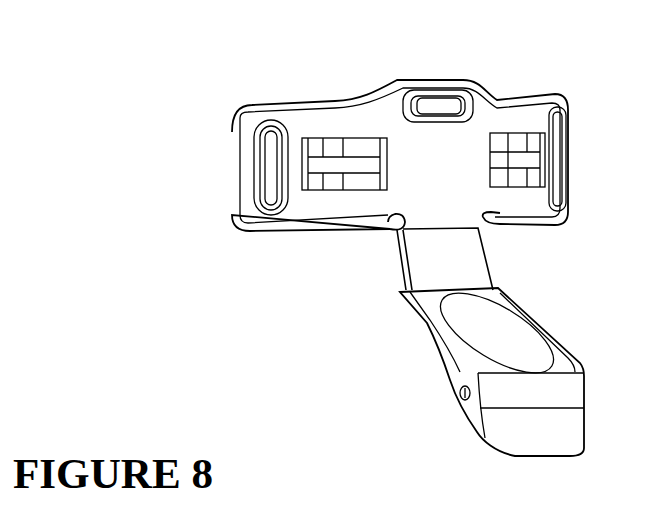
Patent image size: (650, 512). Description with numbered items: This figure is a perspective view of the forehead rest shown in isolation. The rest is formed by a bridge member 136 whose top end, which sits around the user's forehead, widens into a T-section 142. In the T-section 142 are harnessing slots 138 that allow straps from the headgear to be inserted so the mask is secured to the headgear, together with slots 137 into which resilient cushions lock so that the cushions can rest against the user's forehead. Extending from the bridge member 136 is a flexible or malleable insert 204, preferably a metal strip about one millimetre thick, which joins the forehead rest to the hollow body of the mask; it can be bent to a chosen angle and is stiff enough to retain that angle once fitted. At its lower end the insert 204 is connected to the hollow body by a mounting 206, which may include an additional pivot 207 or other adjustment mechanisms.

The bridge member 136 is at (393, 226).
The slots 137 is at (327, 177).
The harnessing slots 138 is at (263, 139).
The T-section 142 is at (460, 148).
The malleable insert 204 is at (400, 265).
The mounting 206 is at (427, 313).
The pivot 207 is at (453, 382).